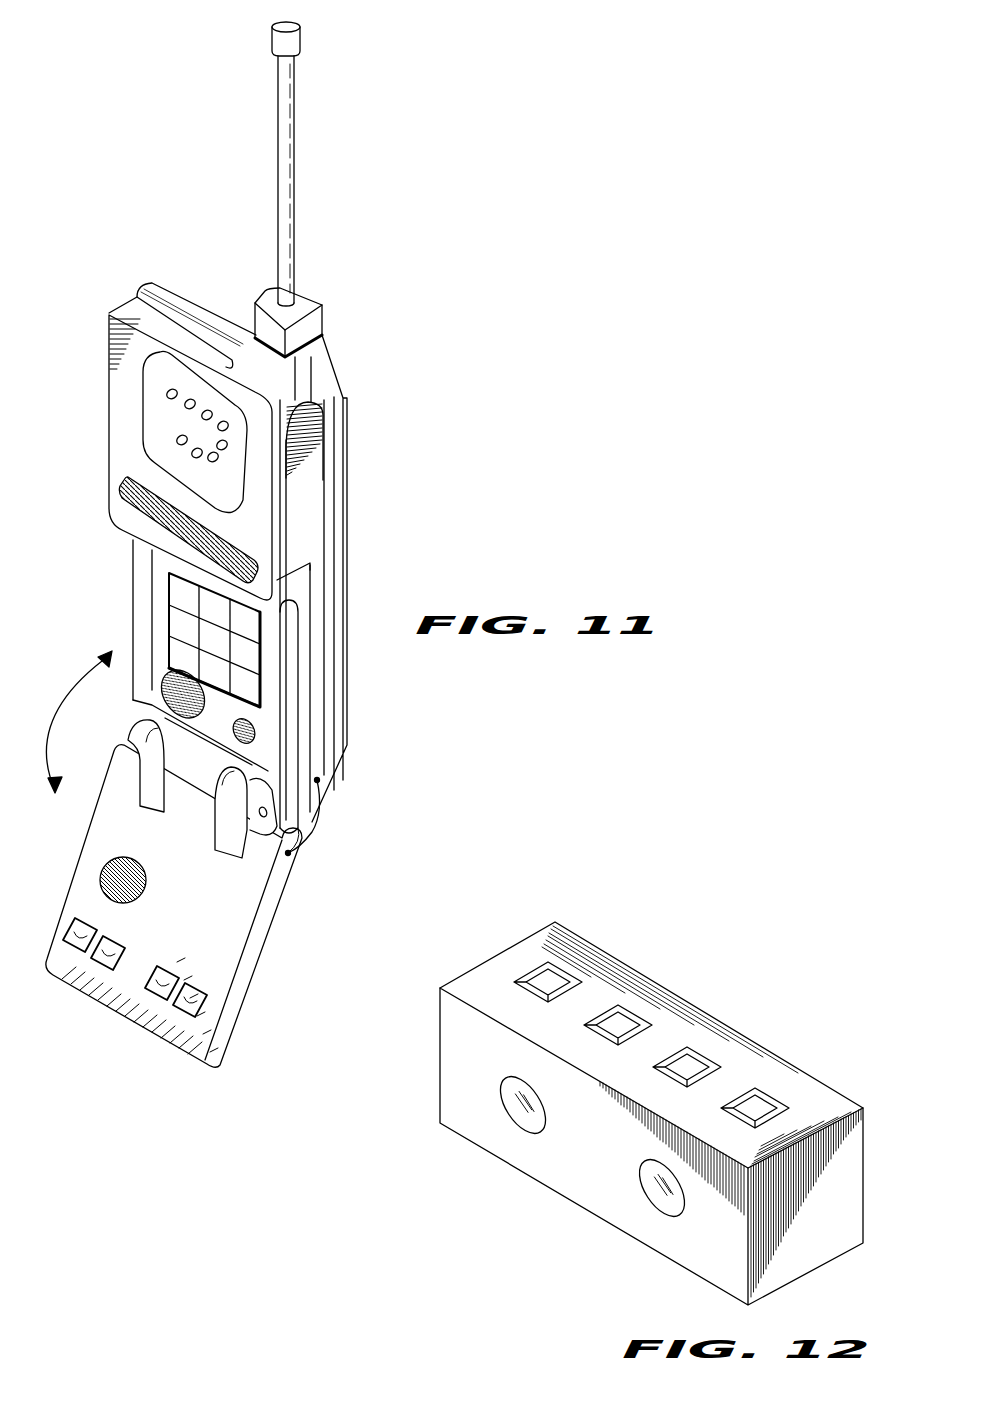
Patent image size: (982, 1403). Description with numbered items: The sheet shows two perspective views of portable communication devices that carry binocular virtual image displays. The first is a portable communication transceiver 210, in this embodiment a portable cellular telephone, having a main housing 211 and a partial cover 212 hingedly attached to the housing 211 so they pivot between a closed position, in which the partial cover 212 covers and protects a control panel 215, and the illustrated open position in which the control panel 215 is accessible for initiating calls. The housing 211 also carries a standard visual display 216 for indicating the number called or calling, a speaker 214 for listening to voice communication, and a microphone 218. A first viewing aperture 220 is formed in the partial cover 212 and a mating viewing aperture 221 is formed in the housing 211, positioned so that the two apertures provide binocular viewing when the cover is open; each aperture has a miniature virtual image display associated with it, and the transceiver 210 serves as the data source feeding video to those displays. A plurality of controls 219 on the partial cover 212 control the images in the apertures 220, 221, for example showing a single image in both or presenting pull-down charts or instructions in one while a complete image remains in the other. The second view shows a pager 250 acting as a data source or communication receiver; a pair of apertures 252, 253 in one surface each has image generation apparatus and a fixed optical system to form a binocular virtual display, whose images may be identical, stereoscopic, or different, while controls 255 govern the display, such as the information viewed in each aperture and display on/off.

In FIG. 11, the portable communication transceiver 210 is at (391, 352).
In FIG. 11, the main housing 211 is at (344, 493).
In FIG. 11, the partial cover 212 is at (291, 887).
In FIG. 11, the speaker 214 is at (150, 409).
In FIG. 11, the control panel 215 is at (173, 624).
In FIG. 11, the visual display 216 is at (126, 491).
In FIG. 11, the microphone 218 is at (256, 731).
In FIG. 11, the controls 219 is at (195, 985).
In FIG. 11, the first viewing aperture 220 is at (148, 882).
In FIG. 11, the mating viewing aperture 221 is at (168, 694).
In FIG. 12, the pager 250 is at (547, 1183).
In FIG. 12, the aperture 252 is at (505, 1092).
In FIG. 12, the aperture 253 is at (645, 1175).
In FIG. 12, the controls 255 is at (595, 1010).